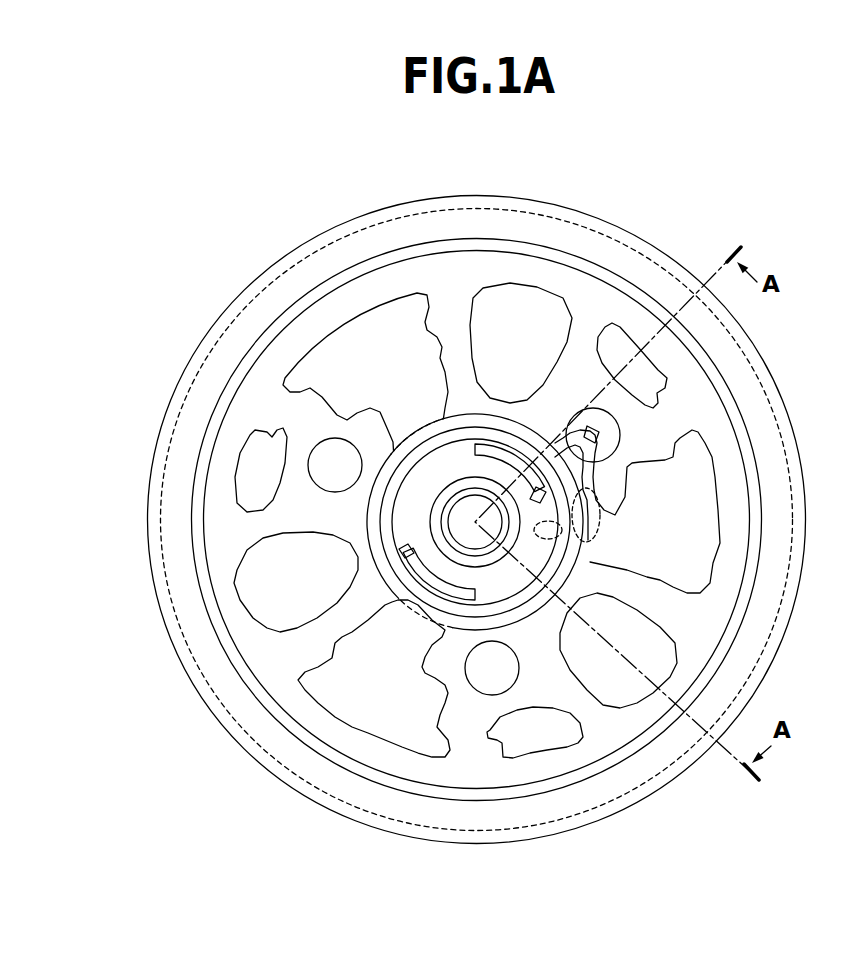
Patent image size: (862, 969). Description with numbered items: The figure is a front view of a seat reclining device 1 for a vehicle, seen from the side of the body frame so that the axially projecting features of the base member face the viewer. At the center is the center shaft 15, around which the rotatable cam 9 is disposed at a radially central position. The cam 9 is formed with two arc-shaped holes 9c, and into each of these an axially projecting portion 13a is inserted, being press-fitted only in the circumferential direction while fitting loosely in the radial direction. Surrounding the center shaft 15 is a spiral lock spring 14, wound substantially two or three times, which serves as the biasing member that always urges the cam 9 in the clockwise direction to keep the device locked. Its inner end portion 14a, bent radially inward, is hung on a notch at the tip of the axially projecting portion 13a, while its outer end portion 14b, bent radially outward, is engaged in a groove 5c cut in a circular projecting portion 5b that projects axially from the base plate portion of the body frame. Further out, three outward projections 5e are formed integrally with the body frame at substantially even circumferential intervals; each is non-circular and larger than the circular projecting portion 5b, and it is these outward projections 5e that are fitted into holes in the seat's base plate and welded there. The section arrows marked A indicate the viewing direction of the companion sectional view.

The seat reclining device 1 is at (861, 298).
The circular projecting portion 5b is at (327, 455).
The groove 5c is at (600, 415).
The outward projection 5e is at (505, 300).
The cam 9 is at (405, 528).
The arc-shaped hole 9c is at (400, 562).
The axially projecting portion 13a is at (428, 587).
The lock spring 14 is at (515, 607).
The inner end portion 14a is at (545, 537).
The outer end portion 14b is at (596, 441).
The center shaft 15 is at (470, 505).